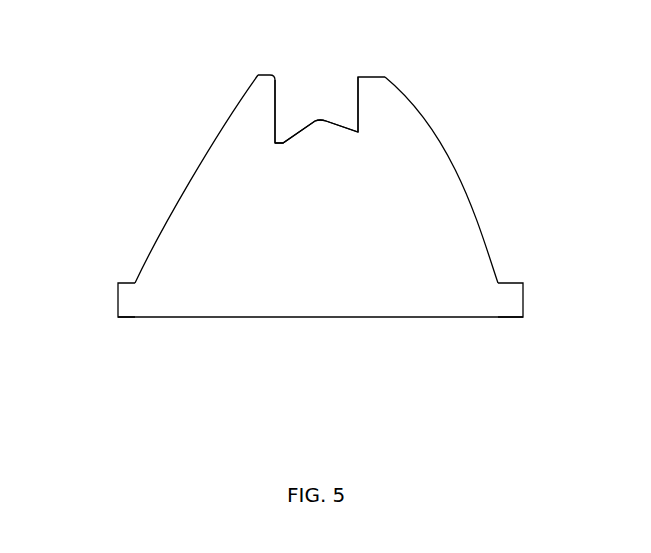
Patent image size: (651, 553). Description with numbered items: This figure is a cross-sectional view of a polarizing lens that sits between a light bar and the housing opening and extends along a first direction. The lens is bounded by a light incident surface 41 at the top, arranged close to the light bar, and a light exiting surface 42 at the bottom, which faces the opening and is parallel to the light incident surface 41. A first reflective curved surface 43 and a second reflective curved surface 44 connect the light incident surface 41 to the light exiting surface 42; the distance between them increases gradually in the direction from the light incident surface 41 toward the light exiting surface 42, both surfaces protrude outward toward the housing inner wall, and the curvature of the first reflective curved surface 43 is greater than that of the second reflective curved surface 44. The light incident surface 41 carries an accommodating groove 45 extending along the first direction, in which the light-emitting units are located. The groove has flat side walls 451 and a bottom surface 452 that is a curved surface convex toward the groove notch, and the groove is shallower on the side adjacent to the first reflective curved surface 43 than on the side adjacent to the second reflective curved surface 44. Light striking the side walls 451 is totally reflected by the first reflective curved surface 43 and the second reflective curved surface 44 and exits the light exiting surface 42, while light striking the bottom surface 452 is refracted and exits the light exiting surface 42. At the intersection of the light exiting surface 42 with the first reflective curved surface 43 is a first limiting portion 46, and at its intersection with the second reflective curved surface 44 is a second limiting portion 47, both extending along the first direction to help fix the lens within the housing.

The light incident surface 41 is at (372, 77).
The light exiting surface 42 is at (317, 317).
The first reflective curved surface 43 is at (463, 177).
The second reflective curved surface 44 is at (173, 203).
The accommodating groove 45 is at (312, 90).
The side walls 451 is at (268, 92).
The bottom surface 452 is at (293, 137).
The first limiting portion 46 is at (520, 288).
The second limiting portion 47 is at (125, 297).